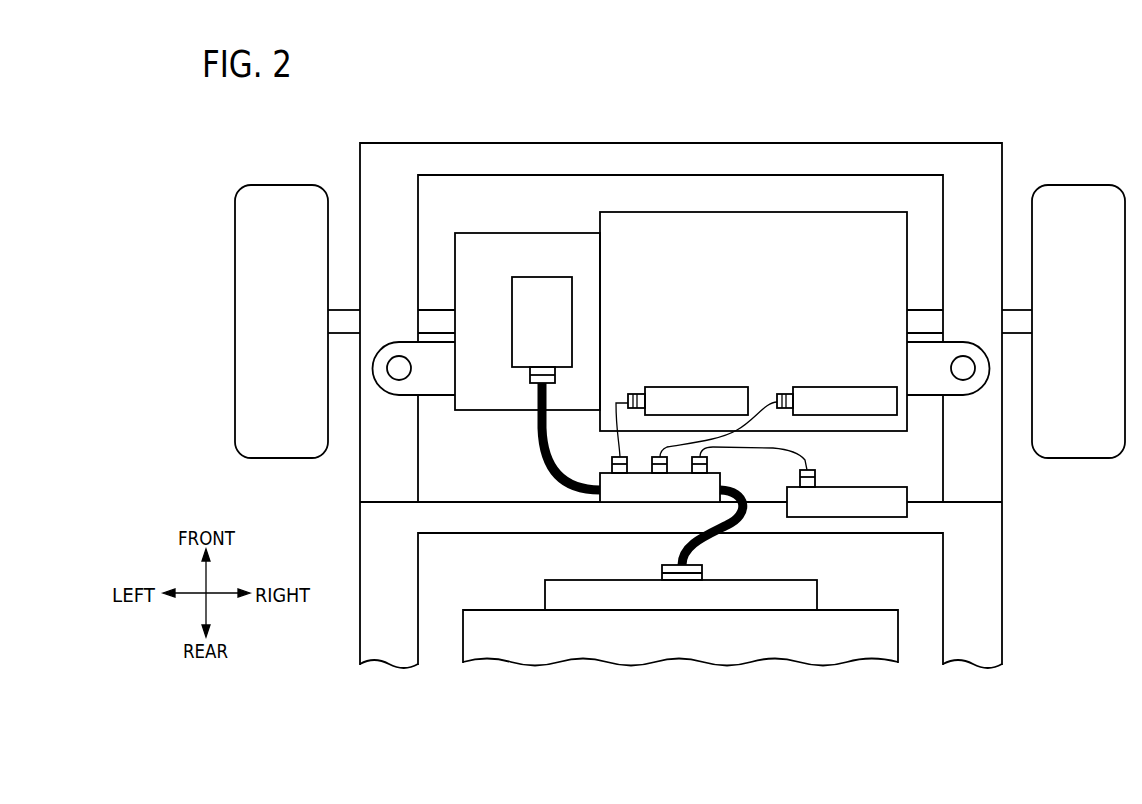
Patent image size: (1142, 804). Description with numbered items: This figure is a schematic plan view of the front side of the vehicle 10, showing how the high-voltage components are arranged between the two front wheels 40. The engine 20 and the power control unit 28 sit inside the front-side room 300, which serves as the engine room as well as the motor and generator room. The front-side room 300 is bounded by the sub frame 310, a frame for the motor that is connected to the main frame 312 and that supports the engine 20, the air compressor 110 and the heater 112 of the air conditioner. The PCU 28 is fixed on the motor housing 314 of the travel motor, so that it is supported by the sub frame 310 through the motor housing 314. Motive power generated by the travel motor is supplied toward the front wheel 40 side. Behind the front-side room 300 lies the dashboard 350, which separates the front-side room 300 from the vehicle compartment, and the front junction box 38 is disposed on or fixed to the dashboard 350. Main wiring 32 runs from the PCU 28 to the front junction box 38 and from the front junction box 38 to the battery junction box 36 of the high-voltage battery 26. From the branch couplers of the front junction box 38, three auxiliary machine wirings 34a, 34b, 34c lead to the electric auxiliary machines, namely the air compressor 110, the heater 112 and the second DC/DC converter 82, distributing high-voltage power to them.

The vehicle 10 is at (1071, 105).
The engine 20 is at (790, 212).
The high-voltage battery 26 is at (500, 610).
The power control unit 28 is at (510, 301).
The main wiring 32 is at (537, 444).
The auxiliary machine wiring 34a is at (764, 401).
The auxiliary machine wiring 34b is at (616, 403).
The auxiliary machine wiring 34c is at (801, 453).
The battery junction box 36 is at (815, 593).
The front junction box 38 is at (598, 472).
The front wheel 40 is at (272, 190).
The second DC/DC converter 82 is at (883, 487).
The air compressor 110 is at (865, 387).
The heater 112 is at (716, 387).
The front-side room 300 is at (880, 200).
The sub frame 310 is at (447, 153).
The main frame 312 is at (367, 523).
The motor housing 314 is at (493, 233).
The dashboard 350 is at (918, 523).